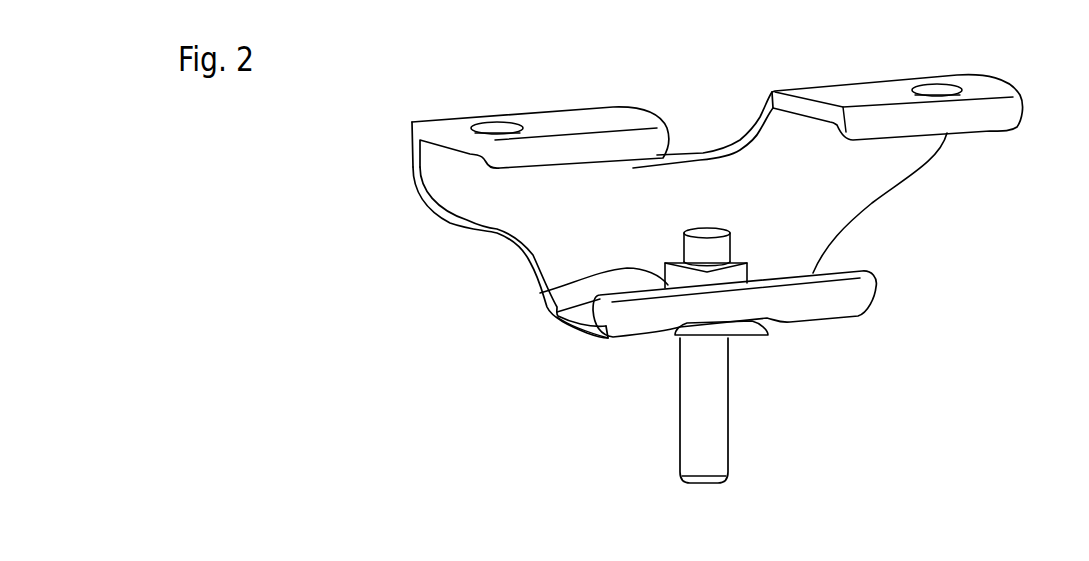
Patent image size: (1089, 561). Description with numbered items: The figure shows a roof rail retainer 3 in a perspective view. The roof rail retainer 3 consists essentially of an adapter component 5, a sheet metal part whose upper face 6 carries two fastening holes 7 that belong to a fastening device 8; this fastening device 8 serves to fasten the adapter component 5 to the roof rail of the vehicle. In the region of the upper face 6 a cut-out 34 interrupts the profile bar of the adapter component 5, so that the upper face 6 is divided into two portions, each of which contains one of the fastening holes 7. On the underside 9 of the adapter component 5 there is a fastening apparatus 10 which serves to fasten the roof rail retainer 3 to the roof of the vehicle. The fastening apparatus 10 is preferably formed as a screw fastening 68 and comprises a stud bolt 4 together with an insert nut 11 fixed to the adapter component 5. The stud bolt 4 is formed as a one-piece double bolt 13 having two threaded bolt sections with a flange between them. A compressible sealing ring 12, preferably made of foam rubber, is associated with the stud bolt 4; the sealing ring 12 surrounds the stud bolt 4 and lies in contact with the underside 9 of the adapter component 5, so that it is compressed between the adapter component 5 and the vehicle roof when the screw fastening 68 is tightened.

The roof rail retainer 3 is at (738, 218).
The stud bolt 4 is at (812, 355).
The adapter component 5 is at (803, 183).
The upper face 6 is at (573, 122).
The fastening holes 7 is at (500, 128).
The fastening device 8 is at (525, 115).
The underside 9 is at (587, 342).
The fastening apparatus 10 is at (668, 342).
The insert nut 11 is at (545, 292).
The sealing ring 12 is at (750, 328).
The double bolt 13 is at (717, 388).
The cut-out 34 is at (692, 147).
The screw fastening 68 is at (762, 256).